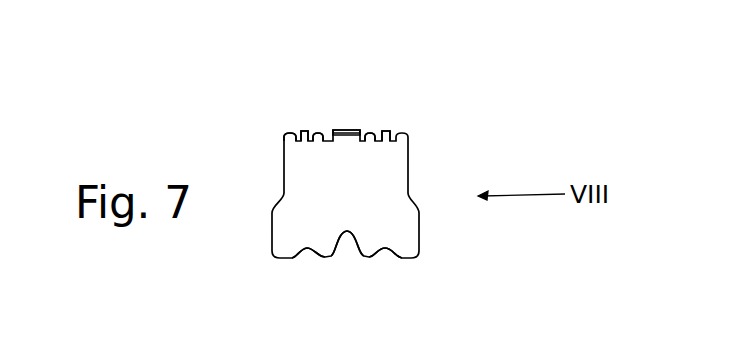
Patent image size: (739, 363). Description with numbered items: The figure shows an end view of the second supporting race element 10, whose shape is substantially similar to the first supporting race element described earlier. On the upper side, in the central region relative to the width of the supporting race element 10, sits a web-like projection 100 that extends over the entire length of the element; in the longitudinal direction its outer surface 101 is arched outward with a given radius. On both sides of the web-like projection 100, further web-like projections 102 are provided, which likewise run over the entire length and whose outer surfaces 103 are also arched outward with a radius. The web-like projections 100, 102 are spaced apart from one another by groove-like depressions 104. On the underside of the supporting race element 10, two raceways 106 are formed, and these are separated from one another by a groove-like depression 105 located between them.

The supporting race element 10 is at (458, 157).
The web-like projection 100 is at (362, 129).
The outwardly arched outer surface 101 is at (340, 129).
The further web-like projections 102 is at (320, 130).
The outwardly arched outer surface 103 is at (386, 130).
The groove-like depression 104 is at (296, 136).
The groove-like depression 105 is at (348, 236).
The raceway 106 is at (307, 249).